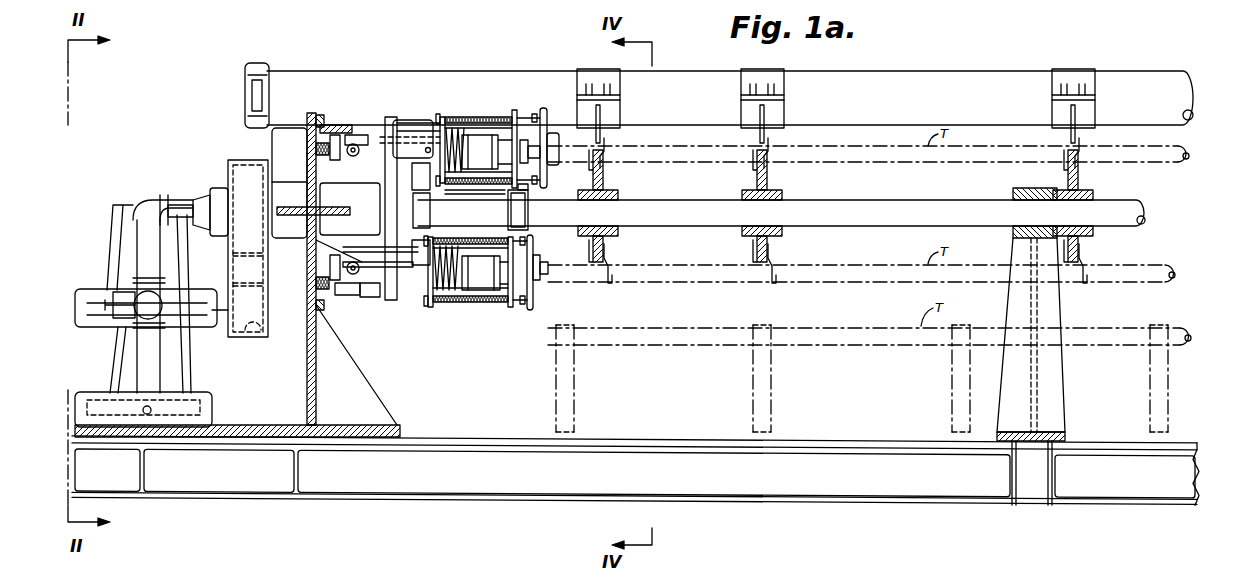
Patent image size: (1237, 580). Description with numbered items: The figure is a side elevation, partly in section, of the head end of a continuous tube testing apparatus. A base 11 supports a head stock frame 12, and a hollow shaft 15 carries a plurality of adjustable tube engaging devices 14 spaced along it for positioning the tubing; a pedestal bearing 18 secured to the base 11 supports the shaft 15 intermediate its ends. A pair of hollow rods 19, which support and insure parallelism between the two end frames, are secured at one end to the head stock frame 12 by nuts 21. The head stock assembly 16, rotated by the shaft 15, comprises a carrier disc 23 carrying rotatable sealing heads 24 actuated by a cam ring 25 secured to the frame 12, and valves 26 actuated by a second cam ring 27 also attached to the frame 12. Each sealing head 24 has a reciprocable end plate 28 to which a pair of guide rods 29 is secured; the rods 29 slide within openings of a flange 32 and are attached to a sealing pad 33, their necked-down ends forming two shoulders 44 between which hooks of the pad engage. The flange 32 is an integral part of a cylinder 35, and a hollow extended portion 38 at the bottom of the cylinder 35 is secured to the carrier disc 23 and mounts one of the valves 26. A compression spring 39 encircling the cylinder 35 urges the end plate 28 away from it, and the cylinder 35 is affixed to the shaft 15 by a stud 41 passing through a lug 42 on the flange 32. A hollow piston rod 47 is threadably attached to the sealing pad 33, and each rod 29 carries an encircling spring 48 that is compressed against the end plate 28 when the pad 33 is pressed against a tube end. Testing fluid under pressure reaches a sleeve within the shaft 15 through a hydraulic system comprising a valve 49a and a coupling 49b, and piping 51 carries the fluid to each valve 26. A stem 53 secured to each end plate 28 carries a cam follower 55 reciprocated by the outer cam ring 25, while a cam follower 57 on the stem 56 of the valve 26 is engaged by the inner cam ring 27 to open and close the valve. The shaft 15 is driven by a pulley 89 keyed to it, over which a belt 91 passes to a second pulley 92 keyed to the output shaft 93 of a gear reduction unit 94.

The base 11 is at (452, 488).
The head stock frame 12 is at (315, 369).
The adjustable tube engaging devices 14 is at (610, 184).
The hollow shaft 15 is at (697, 198).
The head stock assembly 16 is at (385, 110).
The pedestal bearing 18 is at (1056, 384).
The hollow rods 19 is at (938, 78).
The nuts 21 is at (248, 67).
The carrier disc 23 is at (398, 126).
The sealing heads 24 is at (500, 134).
The cam ring 25 is at (318, 114).
The valves 26 is at (340, 124).
The second cam ring 27 is at (314, 148).
The end plate 28 is at (446, 118).
The guide rods 29 is at (440, 128).
The flange 32 is at (515, 130).
The sealing pad 33 is at (543, 106).
The cylinder 35 is at (480, 138).
The hollow extended portion 38 is at (407, 146).
The compression spring 39 is at (462, 195).
The stud 41 is at (508, 193).
The lug 42 is at (529, 193).
The shoulders 44 is at (546, 142).
The hollow piston rod 47 is at (540, 152).
The encircling spring 48 is at (474, 119).
The valve 49a is at (133, 275).
The coupling 49b is at (205, 196).
The piping 51 is at (401, 226).
The stem 53 is at (405, 136).
The cam follower 55 is at (370, 133).
The stem 56 is at (338, 238).
The cam follower 57 is at (316, 172).
The pulley 89 is at (230, 170).
The belt 91 is at (228, 266).
The second pulley 92 is at (250, 335).
The output shaft 93 is at (222, 310).
The gear reduction unit 94 is at (118, 210).